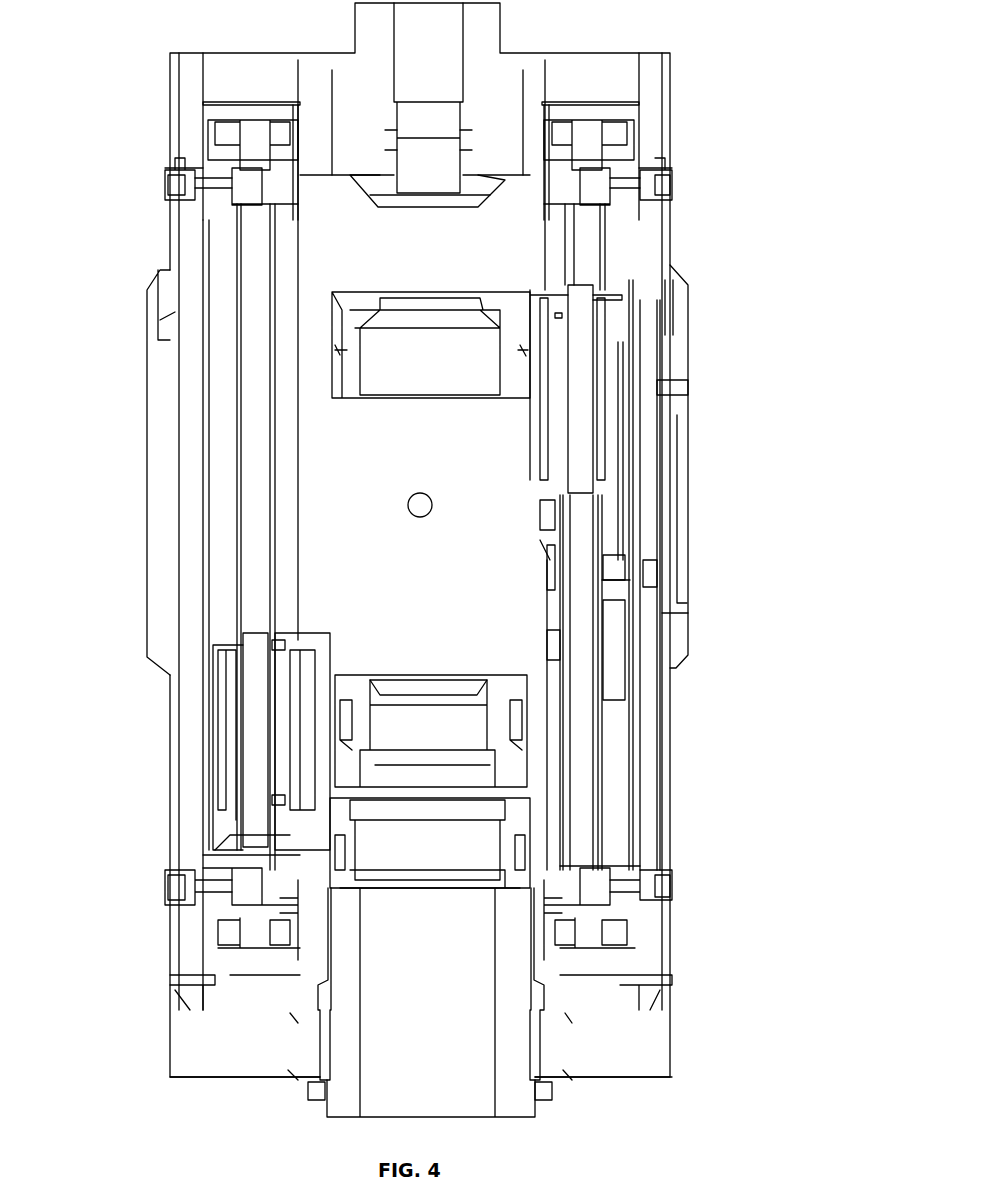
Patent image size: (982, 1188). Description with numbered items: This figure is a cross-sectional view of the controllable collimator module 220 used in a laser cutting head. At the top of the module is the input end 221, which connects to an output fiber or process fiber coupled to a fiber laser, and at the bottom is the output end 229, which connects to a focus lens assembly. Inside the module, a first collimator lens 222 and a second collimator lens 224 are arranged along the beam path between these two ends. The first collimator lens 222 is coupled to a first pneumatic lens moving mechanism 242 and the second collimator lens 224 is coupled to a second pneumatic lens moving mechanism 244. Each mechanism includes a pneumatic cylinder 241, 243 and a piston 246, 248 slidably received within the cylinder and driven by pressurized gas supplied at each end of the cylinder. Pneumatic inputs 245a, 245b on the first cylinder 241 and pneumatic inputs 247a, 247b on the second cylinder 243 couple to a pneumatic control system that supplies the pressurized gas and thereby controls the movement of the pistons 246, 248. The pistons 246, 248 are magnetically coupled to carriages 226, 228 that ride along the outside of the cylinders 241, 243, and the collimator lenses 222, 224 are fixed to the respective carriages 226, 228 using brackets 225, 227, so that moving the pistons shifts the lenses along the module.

The controllable collimator module 220 is at (712, 158).
The input end 221 is at (500, 15).
The first collimator lens 222 is at (430, 420).
The second collimator lens 224 is at (420, 665).
The bracket 225 is at (323, 633).
The carriage 226 is at (222, 765).
The bracket 227 is at (533, 297).
The carriage 228 is at (618, 342).
The output end 229 is at (532, 1112).
The pneumatic cylinder 241 is at (295, 490).
The first pneumatic lens moving mechanism 242 is at (170, 725).
The pneumatic cylinder 243 is at (578, 578).
The second pneumatic lens moving mechanism 244 is at (650, 392).
The pneumatic input 245a is at (165, 183).
The pneumatic input 245b is at (170, 888).
The piston 246 is at (244, 693).
The pneumatic input 247a is at (672, 185).
The pneumatic input 247b is at (673, 890).
The piston 248 is at (592, 330).